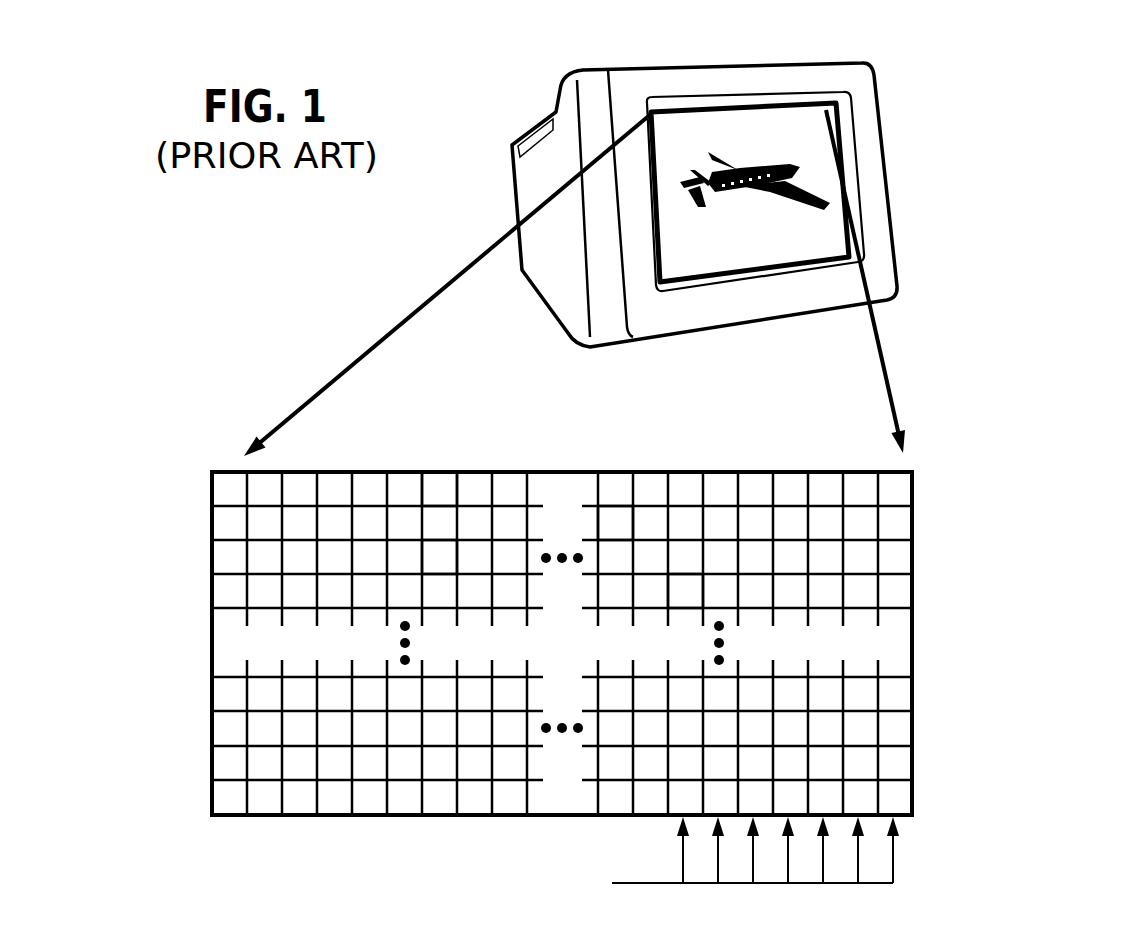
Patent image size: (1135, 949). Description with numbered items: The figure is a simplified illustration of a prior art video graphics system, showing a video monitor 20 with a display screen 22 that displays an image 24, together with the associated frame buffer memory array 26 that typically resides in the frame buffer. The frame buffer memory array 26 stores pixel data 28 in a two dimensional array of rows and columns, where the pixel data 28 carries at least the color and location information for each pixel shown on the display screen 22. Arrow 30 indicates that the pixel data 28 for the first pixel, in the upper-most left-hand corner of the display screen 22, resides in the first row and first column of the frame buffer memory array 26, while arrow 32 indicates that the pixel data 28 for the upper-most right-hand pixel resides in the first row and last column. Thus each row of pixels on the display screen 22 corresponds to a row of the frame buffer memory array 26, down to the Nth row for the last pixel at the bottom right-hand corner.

The video monitor 20 is at (545, 118).
The display screen 22 is at (696, 98).
The image 24 is at (752, 165).
The frame buffer memory array 26 is at (333, 470).
The pixel data 28 is at (440, 560).
The arrow 30 is at (412, 302).
The arrow 32 is at (883, 385).